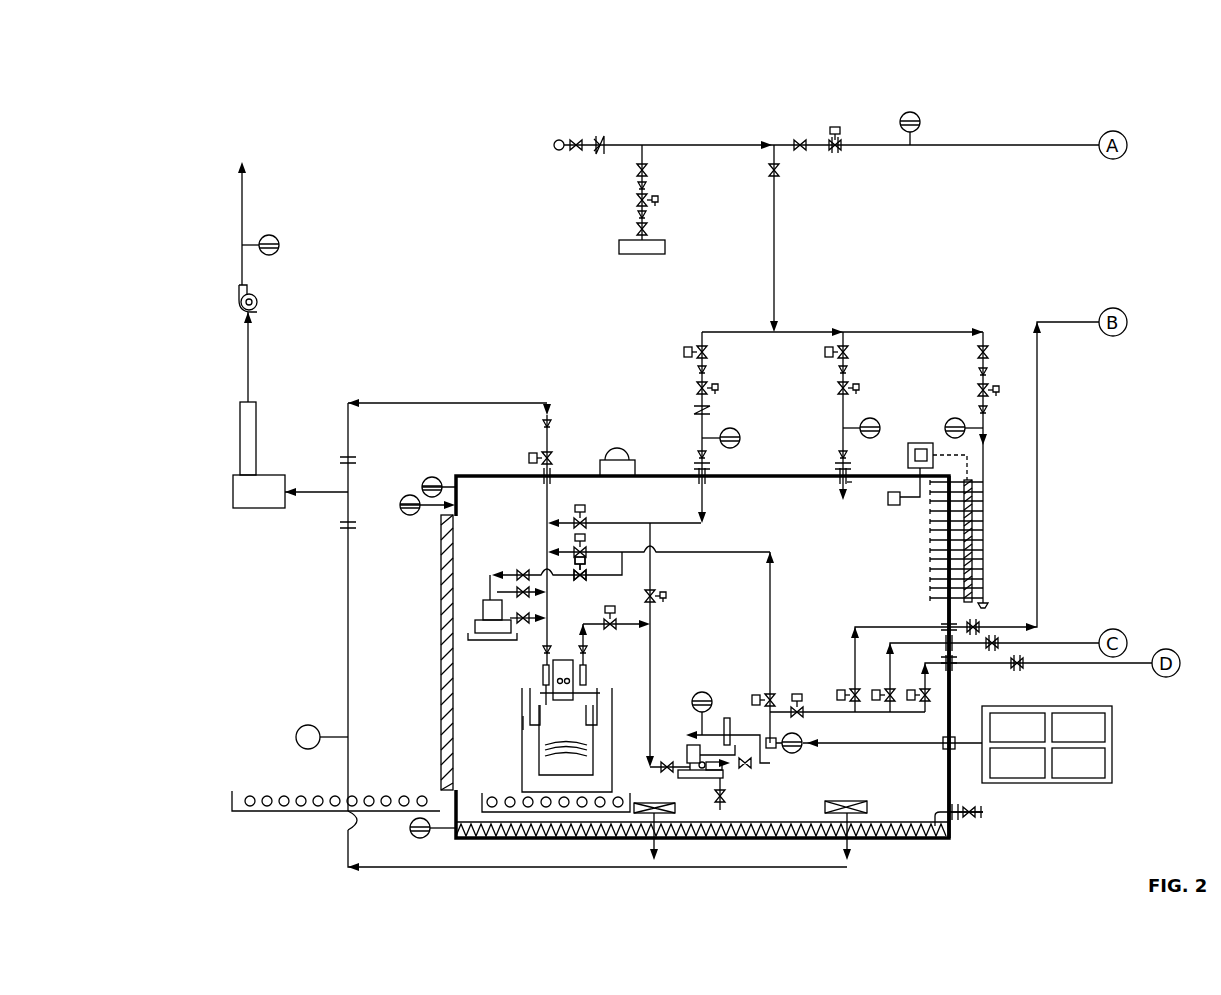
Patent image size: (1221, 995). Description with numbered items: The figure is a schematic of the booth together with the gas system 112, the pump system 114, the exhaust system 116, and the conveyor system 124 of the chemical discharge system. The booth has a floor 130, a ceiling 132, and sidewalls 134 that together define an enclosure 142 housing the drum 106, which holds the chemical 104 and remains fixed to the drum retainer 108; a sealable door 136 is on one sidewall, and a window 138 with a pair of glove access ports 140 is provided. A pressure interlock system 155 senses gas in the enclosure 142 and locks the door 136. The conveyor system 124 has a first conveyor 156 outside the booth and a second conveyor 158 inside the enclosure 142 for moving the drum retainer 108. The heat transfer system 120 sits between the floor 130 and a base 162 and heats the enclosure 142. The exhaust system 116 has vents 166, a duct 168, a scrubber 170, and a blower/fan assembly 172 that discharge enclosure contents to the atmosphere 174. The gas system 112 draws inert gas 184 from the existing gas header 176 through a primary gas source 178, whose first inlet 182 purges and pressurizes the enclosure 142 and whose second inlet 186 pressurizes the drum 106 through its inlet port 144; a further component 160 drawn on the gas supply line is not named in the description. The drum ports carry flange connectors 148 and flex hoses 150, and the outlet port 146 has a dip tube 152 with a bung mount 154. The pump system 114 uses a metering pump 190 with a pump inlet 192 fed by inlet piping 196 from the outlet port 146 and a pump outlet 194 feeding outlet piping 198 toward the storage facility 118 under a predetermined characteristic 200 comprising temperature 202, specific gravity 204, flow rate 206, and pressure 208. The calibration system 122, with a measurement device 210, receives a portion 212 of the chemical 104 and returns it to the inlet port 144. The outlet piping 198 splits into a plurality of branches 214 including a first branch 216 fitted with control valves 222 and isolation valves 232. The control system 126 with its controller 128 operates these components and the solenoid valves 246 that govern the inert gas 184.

The chemical 104 is at (535, 750).
The drum 106 is at (512, 762).
The drum retainer 108 is at (630, 752).
The gas system 112 is at (690, 128).
The pump system 114 is at (718, 712).
The exhaust system 116 is at (232, 453).
The storage facility 118 is at (268, 232).
The heat transfer system 120 is at (928, 818).
The calibration system 122 is at (514, 566).
The conveyor system 124 is at (232, 822).
The control system 126 is at (913, 432).
The controller 128 is at (928, 432).
The floor 130 is at (800, 815).
The ceiling 132 is at (788, 490).
The sidewalls 134 is at (940, 614).
The sealable door 136 is at (432, 540).
The window 138 is at (566, 652).
The glove access ports 140 is at (560, 705).
The enclosure 142 is at (688, 594).
The inlet port 144 is at (538, 705).
The outlet port 146 is at (590, 680).
The flange connectors 148 is at (528, 688).
The flex hoses 150 is at (596, 668).
The dip tube 152 is at (600, 746).
The bung mount 154 is at (560, 718).
The pressure interlock system 155 is at (891, 520).
The first conveyor 156 is at (258, 788).
The second conveyor 158 is at (512, 783).
The gas source 160 is at (608, 250).
The base 162 is at (760, 815).
The vents 166 is at (825, 795).
The duct 168 is at (397, 858).
The scrubber 170 is at (226, 502).
The blower/fan assembly 172 is at (268, 299).
The atmosphere 174 is at (230, 205).
The gas header 176 is at (557, 130).
The primary gas source 178 is at (618, 130).
The first inlet 182 is at (851, 488).
The inert gas 184 is at (834, 490).
The second inlet 186 is at (718, 490).
The metering pump 190 is at (718, 782).
The pump inlet 192 is at (660, 778).
The pump outlet 194 is at (736, 752).
The inlet piping 196 is at (670, 650).
The outlet piping 198 is at (826, 705).
The predetermined characteristic 200 is at (1066, 744).
The temperature 202 is at (1017, 727).
The specific gravity 204 is at (1078, 727).
The flow rate 206 is at (1017, 763).
The pressure 208 is at (1120, 743).
The measurement device 210 is at (478, 600).
The portion 212 is at (562, 583).
The plurality of branches 214 is at (858, 618).
The first branch 216 is at (1003, 615).
The control valves 222 is at (940, 690).
The valves 232 is at (1025, 676).
The solenoid valves 246 is at (978, 475).